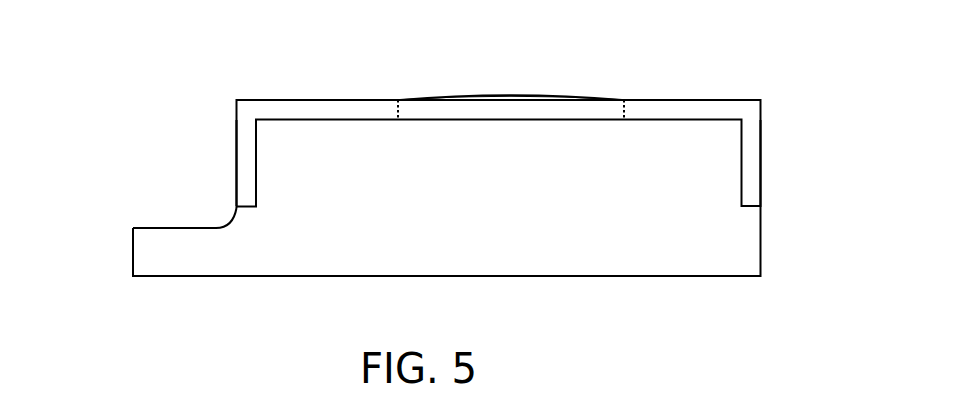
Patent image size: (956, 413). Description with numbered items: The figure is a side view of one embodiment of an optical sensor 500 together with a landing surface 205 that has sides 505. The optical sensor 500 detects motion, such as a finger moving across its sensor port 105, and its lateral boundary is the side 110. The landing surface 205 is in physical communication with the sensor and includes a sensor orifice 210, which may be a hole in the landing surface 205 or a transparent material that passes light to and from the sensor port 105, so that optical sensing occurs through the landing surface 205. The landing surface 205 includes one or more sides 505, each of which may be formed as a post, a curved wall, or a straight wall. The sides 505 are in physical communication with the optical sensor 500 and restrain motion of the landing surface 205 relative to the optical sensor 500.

The optical sensor 500 is at (97, 59).
The side 110 is at (217, 227).
The landing surface 205 is at (290, 99).
The side 505 is at (236, 163).
The sensor orifice 210 is at (402, 98).
The sensor port 105 is at (524, 95).